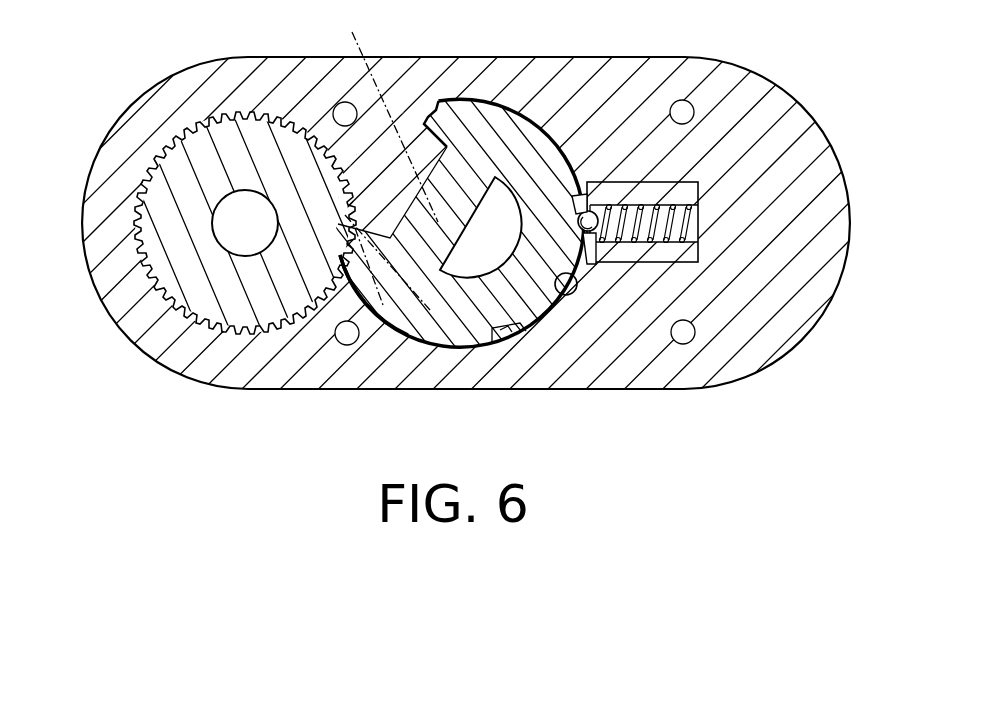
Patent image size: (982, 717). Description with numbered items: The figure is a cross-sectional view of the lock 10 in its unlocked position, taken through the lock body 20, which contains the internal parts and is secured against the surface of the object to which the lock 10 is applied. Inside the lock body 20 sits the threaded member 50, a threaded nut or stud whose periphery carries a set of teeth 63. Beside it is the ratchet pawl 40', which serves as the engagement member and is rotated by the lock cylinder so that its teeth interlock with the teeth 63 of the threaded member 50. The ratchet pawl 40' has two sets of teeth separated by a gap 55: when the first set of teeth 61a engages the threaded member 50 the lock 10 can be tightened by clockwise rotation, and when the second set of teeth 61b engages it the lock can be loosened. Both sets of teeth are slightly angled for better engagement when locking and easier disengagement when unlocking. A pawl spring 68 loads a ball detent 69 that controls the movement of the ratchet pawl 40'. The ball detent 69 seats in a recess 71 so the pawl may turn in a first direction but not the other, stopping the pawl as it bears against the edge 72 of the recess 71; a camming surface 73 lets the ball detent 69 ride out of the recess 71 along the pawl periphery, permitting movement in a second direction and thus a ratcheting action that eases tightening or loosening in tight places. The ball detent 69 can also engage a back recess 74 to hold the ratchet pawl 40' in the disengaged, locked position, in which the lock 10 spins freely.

The lock 10 is at (790, 81).
The lock body 20 is at (112, 313).
The threaded member 50 is at (232, 249).
The teeth 63 is at (198, 328).
The ratchet pawl 40' is at (464, 226).
The first set of teeth 61a is at (373, 340).
The second set of teeth 61b is at (433, 92).
The reference axis line 55 is at (386, 114).
The pawl spring 68 is at (675, 182).
The ball detent 69 is at (593, 196).
The recess 71 is at (586, 196).
The edge 72 is at (573, 222).
The camming surface 73 is at (567, 295).
The back recess 74 is at (580, 263).